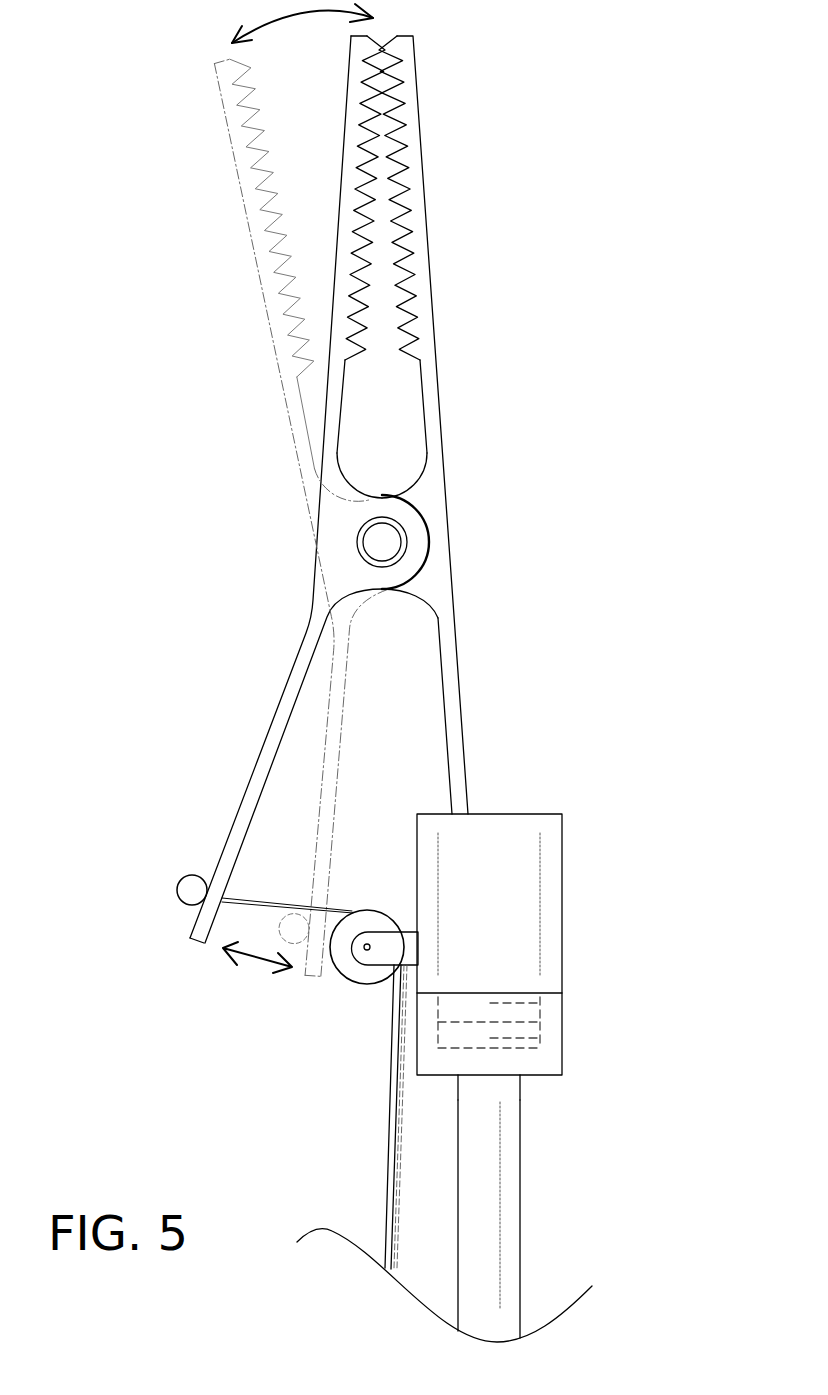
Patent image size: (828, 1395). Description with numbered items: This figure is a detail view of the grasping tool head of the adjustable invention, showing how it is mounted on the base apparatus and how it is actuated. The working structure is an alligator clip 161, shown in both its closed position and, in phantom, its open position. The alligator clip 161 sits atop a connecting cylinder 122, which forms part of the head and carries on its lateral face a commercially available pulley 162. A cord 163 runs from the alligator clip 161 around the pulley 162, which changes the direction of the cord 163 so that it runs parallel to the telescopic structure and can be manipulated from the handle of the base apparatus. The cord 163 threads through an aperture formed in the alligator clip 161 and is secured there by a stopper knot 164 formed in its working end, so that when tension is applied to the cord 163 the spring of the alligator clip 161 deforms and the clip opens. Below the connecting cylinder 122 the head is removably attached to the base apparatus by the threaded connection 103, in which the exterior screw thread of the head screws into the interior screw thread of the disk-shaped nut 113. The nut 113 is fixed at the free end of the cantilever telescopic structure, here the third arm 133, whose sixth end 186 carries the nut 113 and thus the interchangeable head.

The alligator clip 161 is at (441, 443).
The pulley 162 is at (374, 932).
The cord 163 is at (393, 1120).
The stopper knot 164 is at (190, 890).
The connecting cylinder 122 is at (552, 848).
The threaded connection 103 is at (542, 1017).
The nut 113 is at (563, 1038).
The sixth end 186 is at (493, 1080).
The third arm 133 is at (507, 1185).